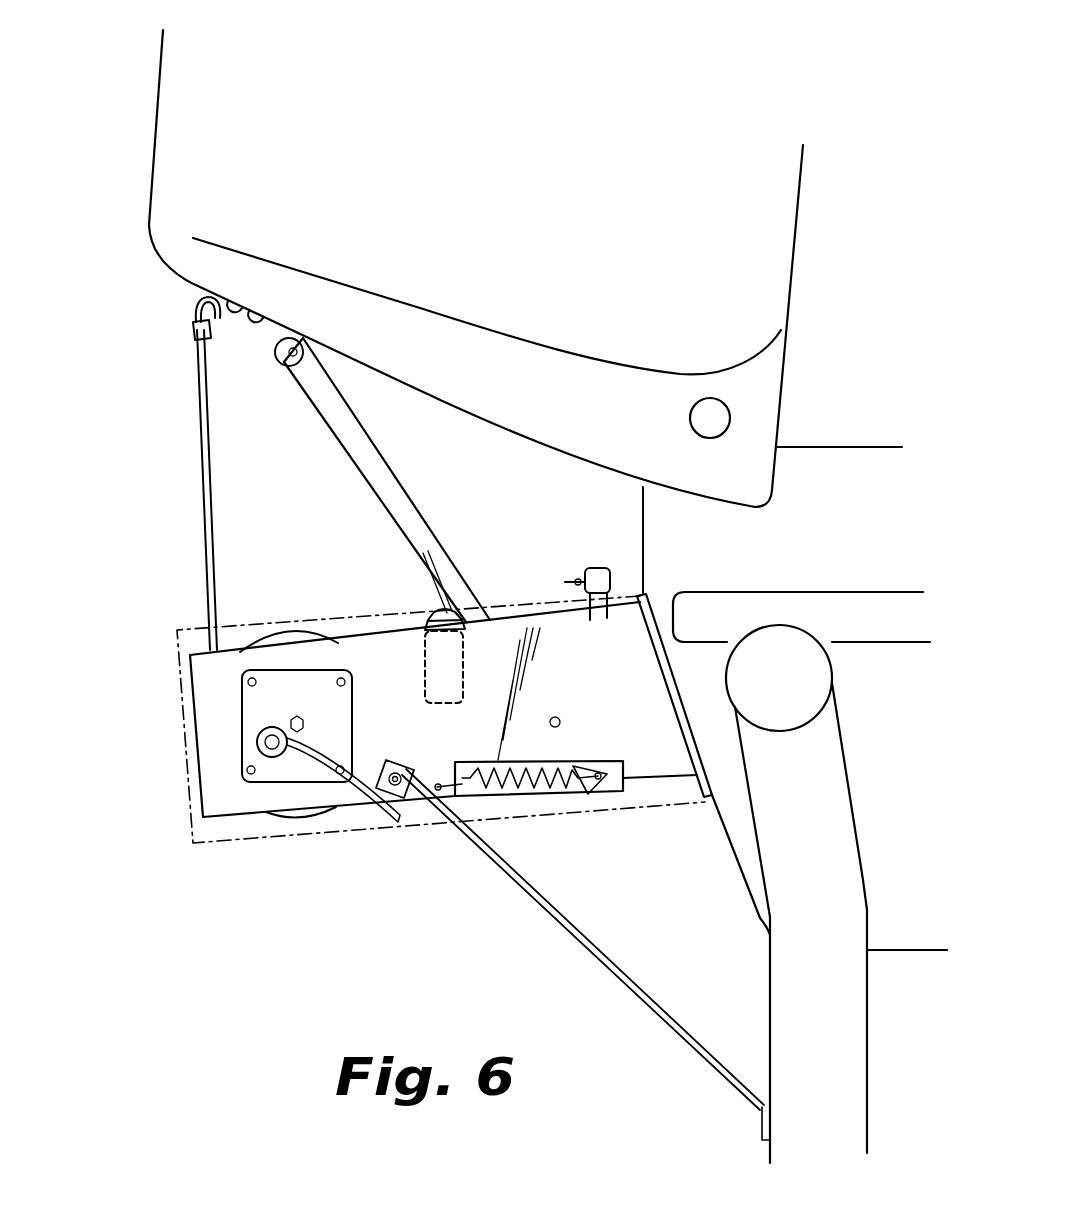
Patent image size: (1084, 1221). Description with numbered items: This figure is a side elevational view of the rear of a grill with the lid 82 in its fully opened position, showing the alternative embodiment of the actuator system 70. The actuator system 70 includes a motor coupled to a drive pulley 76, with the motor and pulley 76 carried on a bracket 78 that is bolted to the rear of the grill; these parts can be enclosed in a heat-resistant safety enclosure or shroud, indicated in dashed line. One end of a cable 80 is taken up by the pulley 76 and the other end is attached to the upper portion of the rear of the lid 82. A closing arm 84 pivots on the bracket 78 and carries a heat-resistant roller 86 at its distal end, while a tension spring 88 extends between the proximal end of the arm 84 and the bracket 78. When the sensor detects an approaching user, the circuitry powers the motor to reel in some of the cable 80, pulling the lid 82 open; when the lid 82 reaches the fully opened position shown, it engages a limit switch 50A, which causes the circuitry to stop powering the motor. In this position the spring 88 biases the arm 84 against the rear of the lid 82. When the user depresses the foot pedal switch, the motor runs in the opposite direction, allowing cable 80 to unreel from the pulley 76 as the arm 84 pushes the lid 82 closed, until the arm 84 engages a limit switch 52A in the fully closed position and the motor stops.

The lid 82 is at (157, 95).
The cable 80 is at (197, 400).
The heat-resistant roller 86 is at (278, 365).
The closing arm 84 is at (370, 480).
The limit switch 50A is at (430, 612).
The limit switch 52A is at (594, 569).
The actuator system 70 is at (148, 676).
The drive pulley 76 is at (310, 813).
The tension spring 88 is at (547, 793).
The bracket 78 is at (673, 748).